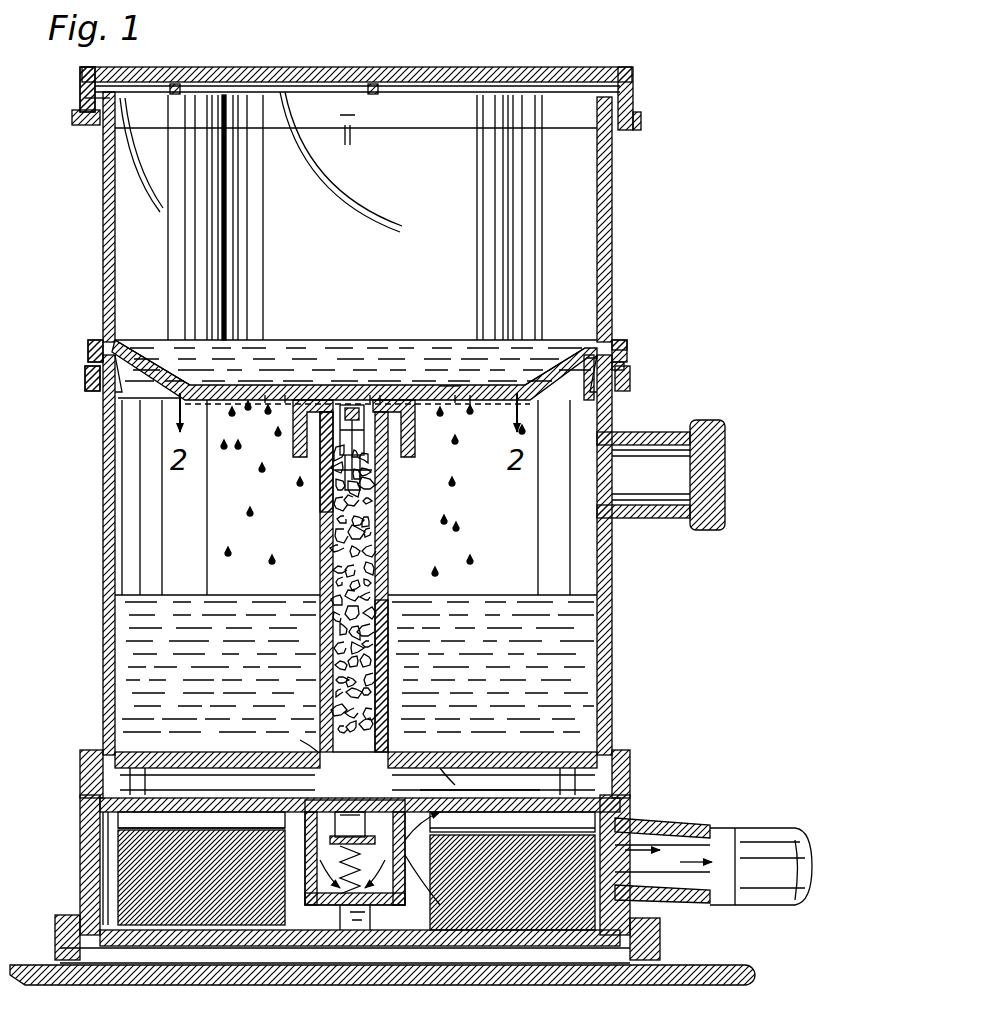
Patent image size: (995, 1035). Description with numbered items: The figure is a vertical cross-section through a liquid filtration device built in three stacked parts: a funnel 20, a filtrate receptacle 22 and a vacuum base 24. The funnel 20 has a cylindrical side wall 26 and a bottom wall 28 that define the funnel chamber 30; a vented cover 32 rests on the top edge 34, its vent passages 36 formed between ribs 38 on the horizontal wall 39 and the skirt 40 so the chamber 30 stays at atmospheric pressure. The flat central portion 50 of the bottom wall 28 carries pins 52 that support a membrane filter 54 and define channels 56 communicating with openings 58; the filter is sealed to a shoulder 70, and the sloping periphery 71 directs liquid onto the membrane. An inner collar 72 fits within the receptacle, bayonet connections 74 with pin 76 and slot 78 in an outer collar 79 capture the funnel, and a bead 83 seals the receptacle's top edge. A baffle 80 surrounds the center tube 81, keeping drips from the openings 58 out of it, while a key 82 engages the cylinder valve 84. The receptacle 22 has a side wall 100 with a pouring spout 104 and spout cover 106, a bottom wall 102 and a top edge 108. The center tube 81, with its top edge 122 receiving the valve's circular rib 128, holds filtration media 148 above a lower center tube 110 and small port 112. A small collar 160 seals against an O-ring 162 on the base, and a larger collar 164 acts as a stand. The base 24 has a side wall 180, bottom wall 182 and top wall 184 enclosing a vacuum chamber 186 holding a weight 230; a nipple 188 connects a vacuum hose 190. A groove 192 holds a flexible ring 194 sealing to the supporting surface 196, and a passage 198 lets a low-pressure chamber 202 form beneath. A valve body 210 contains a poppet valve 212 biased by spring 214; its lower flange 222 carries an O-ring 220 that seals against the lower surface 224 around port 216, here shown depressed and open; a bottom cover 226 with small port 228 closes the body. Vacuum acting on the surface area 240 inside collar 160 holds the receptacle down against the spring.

The funnel 20 is at (614, 228).
The filtrate receptacle 22 is at (614, 622).
The vacuum base 24 is at (642, 806).
The side wall 26 is at (103, 228).
The bottom wall 28 is at (172, 396).
The funnel chamber 30 is at (366, 247).
The cover 32 is at (572, 66).
The top edge 34 is at (95, 130).
The vent passages 36 is at (150, 118).
The ribs 38 is at (180, 90).
The horizontal wall 39 is at (285, 68).
The skirt 40 is at (80, 85).
The flat central portion 50 is at (330, 385).
The pins 52 is at (285, 395).
The membrane filter 54 is at (445, 385).
The channels 56 is at (380, 395).
The openings 58 is at (246, 414).
The shoulder 70 is at (185, 345).
The periphery 71 is at (543, 345).
The inner collar 72 is at (112, 392).
The bayonet connections 74 is at (86, 386).
The pin 76 is at (85, 378).
The slot 78 is at (624, 370).
The outer collar 79 is at (90, 354).
The baffle 80 is at (295, 430).
The center tube 81 is at (400, 548).
The key 82 is at (320, 470).
The bead 83 is at (96, 346).
The cylinder valve 84 is at (372, 472).
The side wall 100 is at (103, 514).
The bottom wall 102 is at (145, 752).
The pouring spout 104 is at (662, 518).
The spout cover 106 is at (726, 476).
The top edge 108 is at (624, 348).
The lower center tube 110 is at (392, 745).
The port 112 is at (388, 702).
The top edge 122 is at (404, 420).
The circular rib 128 is at (388, 460).
The filtration media 148 is at (322, 548).
The collar 160 is at (598, 738).
The O-ring 162 is at (312, 792).
The collar 164 is at (82, 772).
The side wall 180 is at (80, 860).
The bottom wall 182 is at (545, 948).
The top wall 184 is at (585, 752).
The vacuum chamber 186 is at (140, 820).
The nipple 188 is at (700, 820).
The vacuum hose 190 is at (772, 838).
The groove 192 is at (80, 958).
The flexible ring 194 is at (50, 968).
The supporting surface 196 is at (56, 945).
The passage 198 is at (350, 940).
The low-pressure chamber 202 is at (612, 985).
The valve body 210 is at (430, 905).
The poppet valve 212 is at (300, 910).
The spring 214 is at (335, 905).
The port 216 is at (430, 800).
The O-ring 220 is at (285, 930).
The lower flange 222 is at (450, 930).
The lower surface 224 is at (305, 822).
The bottom cover 226 is at (318, 950).
The small port 228 is at (375, 950).
The weight 230 is at (125, 880).
The surface area 240 is at (318, 752).